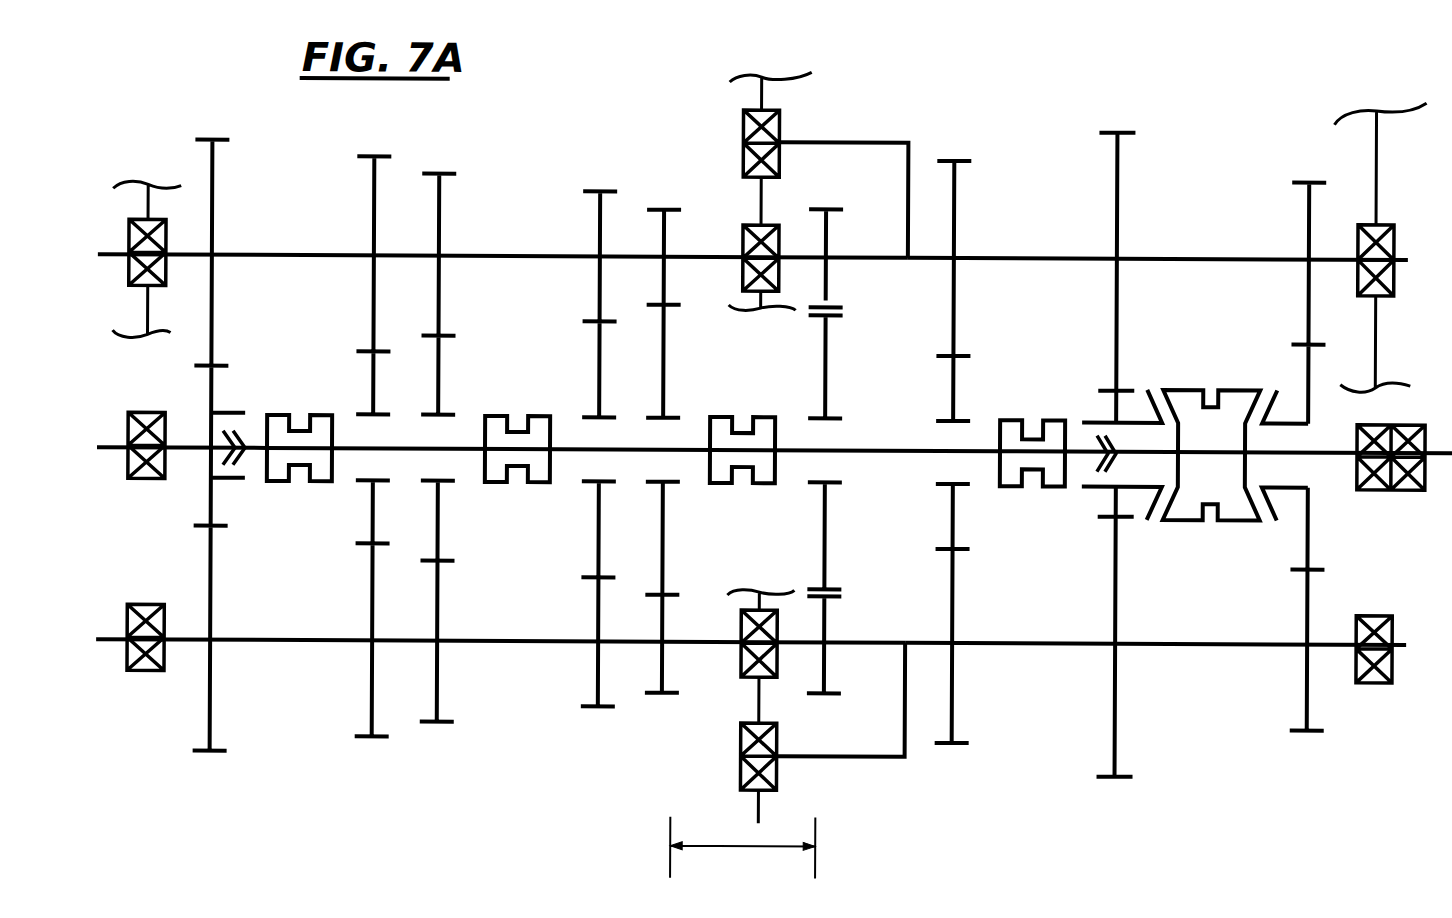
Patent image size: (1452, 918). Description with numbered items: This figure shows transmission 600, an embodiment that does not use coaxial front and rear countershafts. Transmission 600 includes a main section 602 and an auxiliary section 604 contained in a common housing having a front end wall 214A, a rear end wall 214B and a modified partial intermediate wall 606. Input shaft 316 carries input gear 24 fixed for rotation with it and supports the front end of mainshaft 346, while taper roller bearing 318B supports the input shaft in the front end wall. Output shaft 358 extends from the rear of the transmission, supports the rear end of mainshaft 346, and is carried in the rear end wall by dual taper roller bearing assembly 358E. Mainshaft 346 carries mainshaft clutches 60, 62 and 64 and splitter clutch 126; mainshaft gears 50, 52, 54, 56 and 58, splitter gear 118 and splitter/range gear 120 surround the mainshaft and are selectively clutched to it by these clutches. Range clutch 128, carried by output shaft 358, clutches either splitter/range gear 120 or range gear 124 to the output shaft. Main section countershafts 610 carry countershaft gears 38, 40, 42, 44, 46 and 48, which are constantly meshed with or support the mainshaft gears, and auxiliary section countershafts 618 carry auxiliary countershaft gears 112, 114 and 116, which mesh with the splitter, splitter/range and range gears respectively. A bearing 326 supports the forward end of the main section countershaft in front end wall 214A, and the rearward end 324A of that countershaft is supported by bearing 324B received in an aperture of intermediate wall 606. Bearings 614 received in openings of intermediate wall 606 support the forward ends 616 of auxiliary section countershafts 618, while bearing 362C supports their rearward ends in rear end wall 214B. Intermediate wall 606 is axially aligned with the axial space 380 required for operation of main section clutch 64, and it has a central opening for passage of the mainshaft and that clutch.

The transmission 600 is at (875, 121).
The main section 602 is at (382, 803).
The auxiliary section 604 is at (1180, 836).
The partial intermediate wall 606 is at (755, 203).
The main section countershaft 610 is at (340, 252).
The bearing 614 is at (780, 130).
The forward end of auxiliary section countershaft 616 is at (817, 762).
The auxiliary section countershaft 618 is at (1100, 257).
The front end wall 214A is at (150, 317).
The rear end wall 214B is at (1370, 162).
The input shaft 316 is at (188, 450).
The taper roller bearing 318B is at (150, 482).
The bearing 326 is at (163, 660).
The rearward end of main section countershaft 324A is at (977, 260).
The bearing 324B is at (738, 628).
The mainshaft 346 is at (568, 418).
The output shaft 358 is at (1310, 457).
The dual taper roller bearing assembly 358E is at (1428, 488).
The bearing 362C is at (1375, 683).
The axial space 380 is at (772, 848).
The input gear 24 is at (215, 503).
The countershaft gear 38 is at (213, 713).
The countershaft gear 40 is at (371, 297).
The countershaft gear 42 is at (440, 580).
The countershaft gear 44 is at (597, 585).
The countershaft gear 46 is at (652, 235).
The countershaft gear 48 is at (825, 243).
The mainshaft gear 50 is at (372, 497).
The mainshaft gear 52 is at (440, 517).
The mainshaft gear 54 is at (597, 504).
The mainshaft gear 56 is at (667, 338).
The mainshaft gear 58 is at (820, 339).
The mainshaft clutch 60 is at (275, 417).
The mainshaft clutch 62 is at (493, 418).
The mainshaft clutch 64 is at (718, 417).
The auxiliary countershaft gear 112 is at (950, 708).
The auxiliary countershaft gear 114 is at (1116, 702).
The auxiliary countershaft gear 116 is at (1308, 698).
The splitter gear 118 is at (953, 518).
The splitter/range gear 120 is at (1112, 503).
The range gear 124 is at (1306, 530).
The splitter clutch 126 is at (1007, 486).
The range clutch 128 is at (1190, 503).